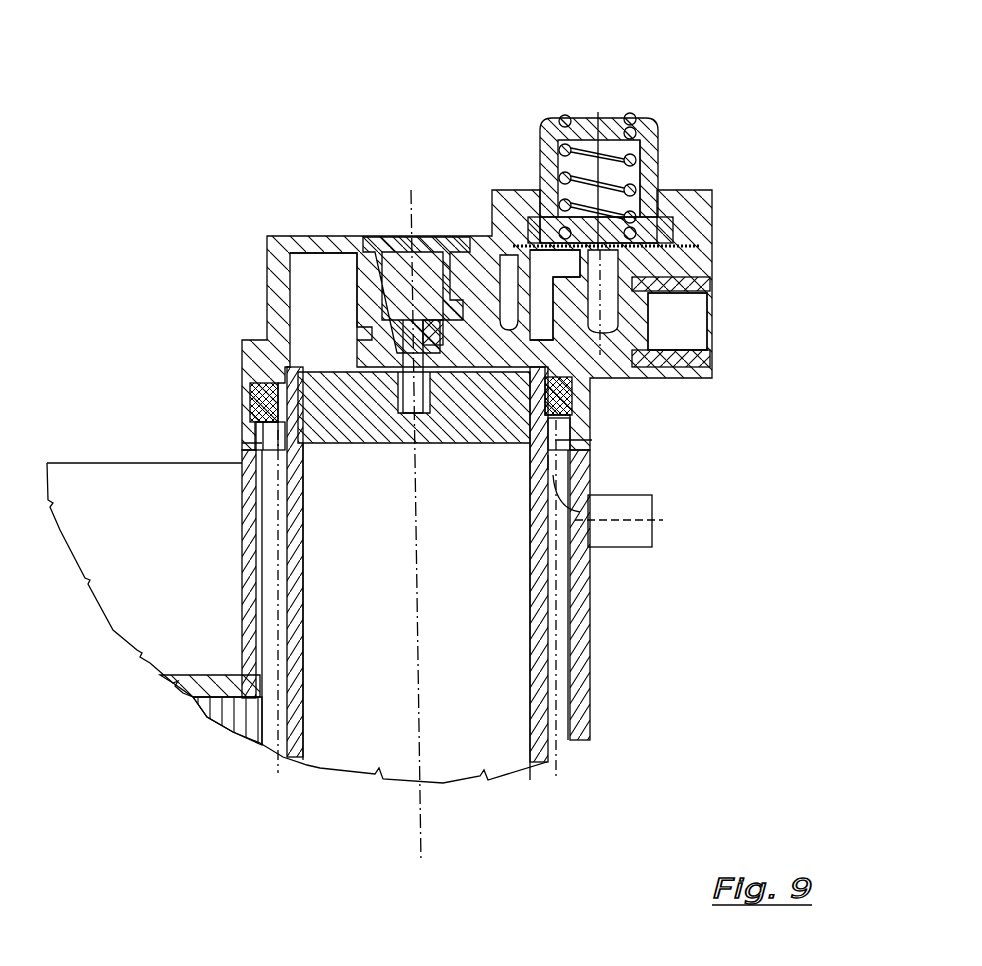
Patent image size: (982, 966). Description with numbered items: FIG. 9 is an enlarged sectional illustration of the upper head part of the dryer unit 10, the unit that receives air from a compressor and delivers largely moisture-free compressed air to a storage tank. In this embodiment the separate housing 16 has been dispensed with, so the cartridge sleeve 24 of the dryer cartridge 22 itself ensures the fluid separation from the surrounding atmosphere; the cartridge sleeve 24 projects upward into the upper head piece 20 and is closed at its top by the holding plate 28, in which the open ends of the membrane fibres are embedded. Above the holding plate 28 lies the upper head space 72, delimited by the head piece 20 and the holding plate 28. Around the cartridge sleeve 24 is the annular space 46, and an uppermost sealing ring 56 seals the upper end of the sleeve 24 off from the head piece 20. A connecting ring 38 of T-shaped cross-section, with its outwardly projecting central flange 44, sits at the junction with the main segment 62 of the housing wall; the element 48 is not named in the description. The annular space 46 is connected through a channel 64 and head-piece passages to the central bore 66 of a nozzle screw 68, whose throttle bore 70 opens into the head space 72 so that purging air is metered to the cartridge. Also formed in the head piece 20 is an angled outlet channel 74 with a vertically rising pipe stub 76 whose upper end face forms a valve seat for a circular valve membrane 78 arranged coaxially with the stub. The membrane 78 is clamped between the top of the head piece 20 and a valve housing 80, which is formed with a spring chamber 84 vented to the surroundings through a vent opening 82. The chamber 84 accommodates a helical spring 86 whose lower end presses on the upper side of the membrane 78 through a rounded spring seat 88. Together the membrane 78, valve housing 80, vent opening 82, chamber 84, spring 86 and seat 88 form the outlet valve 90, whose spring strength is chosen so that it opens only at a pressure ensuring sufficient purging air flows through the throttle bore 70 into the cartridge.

The dryer unit 10 is at (212, 824).
The cylindrical housing 16 is at (236, 608).
The upper head piece 20 is at (240, 393).
The dryer cartridge 22 is at (396, 724).
The cartridge sleeve 24 is at (540, 748).
The holding plate 28 is at (487, 418).
The connecting ring 38 is at (600, 520).
The central flange 44 is at (585, 448).
The annular space 46 is at (563, 743).
The snap ring 48 is at (583, 472).
The sealing ring 56 is at (575, 410).
The main segment 62 is at (582, 582).
The channel 64 is at (400, 445).
The central bore 66 is at (418, 448).
The nozzle screw 68 is at (383, 238).
The throttle bore 70 is at (447, 322).
The upper head space 72 is at (340, 344).
The angled outlet channel 74 is at (600, 322).
The pipe stub 76 is at (640, 268).
The valve membrane 78 is at (655, 262).
The valve housing 80 is at (636, 113).
The vent opening 82 is at (598, 112).
The spring chamber 84 is at (655, 180).
The helical spring 86 is at (654, 140).
The spring seat 88 is at (660, 230).
The outlet valve 90 is at (543, 125).